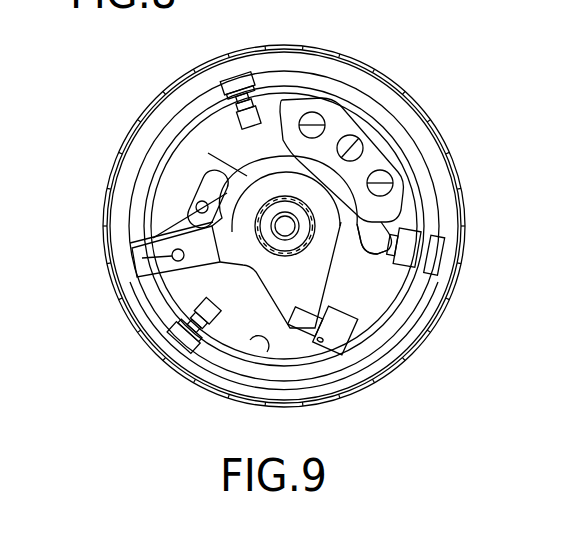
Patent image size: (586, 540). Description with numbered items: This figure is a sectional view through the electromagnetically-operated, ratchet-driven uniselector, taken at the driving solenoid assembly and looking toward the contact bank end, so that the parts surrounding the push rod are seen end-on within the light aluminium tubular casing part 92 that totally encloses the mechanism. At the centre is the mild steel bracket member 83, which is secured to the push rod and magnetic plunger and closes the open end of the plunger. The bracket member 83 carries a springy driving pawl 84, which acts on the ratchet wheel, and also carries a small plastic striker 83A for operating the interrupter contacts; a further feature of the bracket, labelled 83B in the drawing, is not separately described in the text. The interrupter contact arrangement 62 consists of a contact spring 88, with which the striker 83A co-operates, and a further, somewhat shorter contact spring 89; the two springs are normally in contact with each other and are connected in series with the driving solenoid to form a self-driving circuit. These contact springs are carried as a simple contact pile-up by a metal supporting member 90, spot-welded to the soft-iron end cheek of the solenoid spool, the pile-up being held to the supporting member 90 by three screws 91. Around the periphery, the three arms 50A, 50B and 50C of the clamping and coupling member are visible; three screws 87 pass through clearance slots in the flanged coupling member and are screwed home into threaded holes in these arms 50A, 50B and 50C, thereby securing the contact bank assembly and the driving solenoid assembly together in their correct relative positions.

The arm of clamping and coupling member 50A is at (420, 232).
The arm of clamping and coupling member 50B is at (257, 88).
The arm of clamping and coupling member 50C is at (205, 312).
The interrupter contact arrangement 62 is at (373, 152).
The bracket member 83 is at (285, 282).
The striker 83A is at (150, 275).
The pivot pin 83B is at (117, 272).
The driving pawl 84 is at (338, 328).
The screws 87 is at (435, 260).
The contact spring 88 is at (183, 228).
The contact spring 89 is at (203, 192).
The supporting member 90 is at (377, 253).
The screws 91 is at (312, 120).
The tubular casing part 92 is at (415, 100).